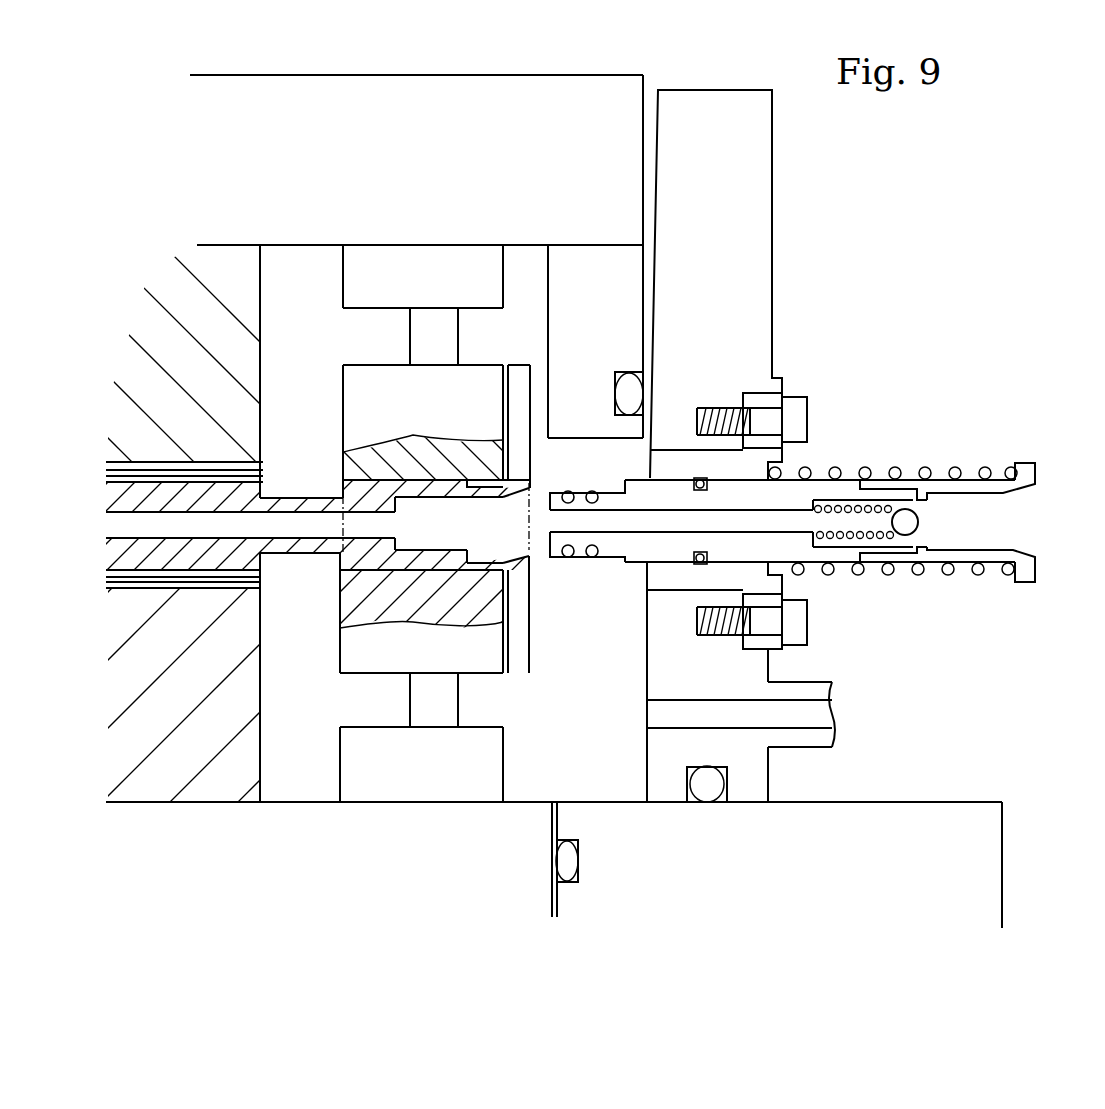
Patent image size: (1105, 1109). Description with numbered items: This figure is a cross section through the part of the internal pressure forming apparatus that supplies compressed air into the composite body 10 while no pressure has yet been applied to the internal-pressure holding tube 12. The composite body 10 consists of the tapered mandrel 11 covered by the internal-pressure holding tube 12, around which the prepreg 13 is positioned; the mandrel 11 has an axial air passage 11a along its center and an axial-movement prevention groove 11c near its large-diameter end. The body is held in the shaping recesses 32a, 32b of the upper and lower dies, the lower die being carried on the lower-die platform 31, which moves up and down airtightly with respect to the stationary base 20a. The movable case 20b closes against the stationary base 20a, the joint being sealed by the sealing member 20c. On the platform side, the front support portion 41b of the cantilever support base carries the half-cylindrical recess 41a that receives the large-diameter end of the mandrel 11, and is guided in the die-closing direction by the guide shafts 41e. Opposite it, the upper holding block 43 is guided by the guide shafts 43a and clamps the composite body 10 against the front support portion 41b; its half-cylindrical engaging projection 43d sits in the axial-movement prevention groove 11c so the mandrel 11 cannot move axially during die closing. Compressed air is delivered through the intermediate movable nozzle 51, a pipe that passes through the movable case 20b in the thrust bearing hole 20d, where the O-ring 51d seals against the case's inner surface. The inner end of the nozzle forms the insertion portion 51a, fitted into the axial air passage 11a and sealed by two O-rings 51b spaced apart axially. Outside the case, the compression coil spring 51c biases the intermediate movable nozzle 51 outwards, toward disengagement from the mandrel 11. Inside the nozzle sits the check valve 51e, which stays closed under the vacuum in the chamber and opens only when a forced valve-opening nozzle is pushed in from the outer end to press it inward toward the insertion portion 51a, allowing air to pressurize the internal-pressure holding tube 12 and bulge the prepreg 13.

The composite body 10 is at (318, 460).
The mandrel 11 is at (261, 497).
The axial air passage 11a is at (508, 548).
The axial-movement prevention groove 11c is at (403, 567).
The internal-pressure holding tube 12 is at (266, 476).
The prepreg 13 is at (257, 462).
The stationary base 20a is at (943, 820).
The movable case 20b is at (793, 158).
The sealing member 20c is at (718, 783).
The thrust bearing hole 20d is at (743, 481).
The lower-die platform 31 is at (285, 815).
The shaping recess 32a is at (226, 474).
The shaping recess 32b is at (257, 585).
The half-cylindrical recess 41a is at (435, 570).
The front support portion 41b is at (552, 550).
The guide shafts 41e is at (410, 706).
The upper holding block 43 is at (542, 550).
The guide shafts 43a is at (418, 340).
The half-cylindrical engaging projection 43d is at (443, 478).
The intermediate movable nozzle 51 is at (881, 474).
The insertion portion 51a is at (552, 545).
The O-rings 51b is at (570, 556).
The compression coil spring 51c is at (988, 468).
The O-ring 51d is at (700, 475).
The check valve 51e is at (907, 530).